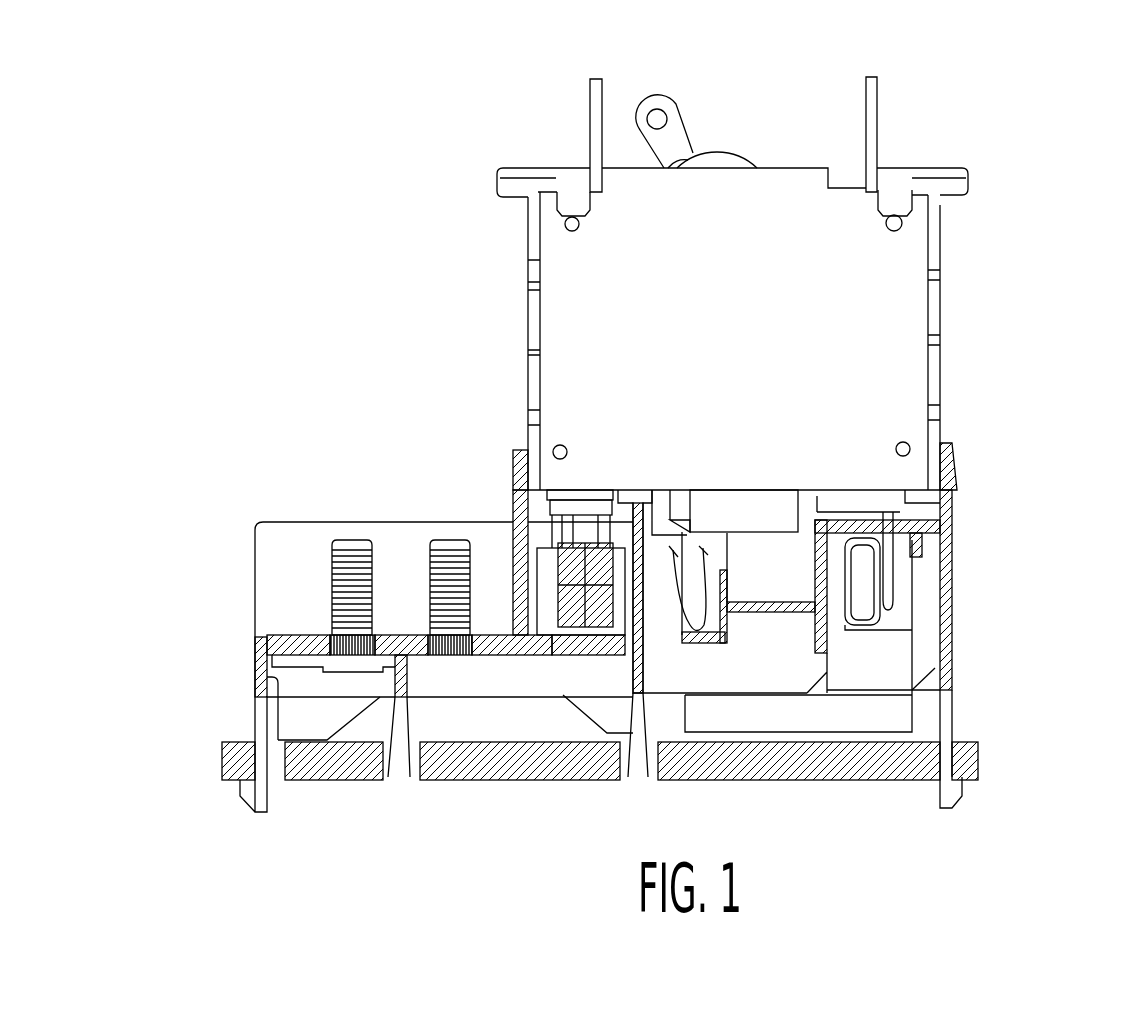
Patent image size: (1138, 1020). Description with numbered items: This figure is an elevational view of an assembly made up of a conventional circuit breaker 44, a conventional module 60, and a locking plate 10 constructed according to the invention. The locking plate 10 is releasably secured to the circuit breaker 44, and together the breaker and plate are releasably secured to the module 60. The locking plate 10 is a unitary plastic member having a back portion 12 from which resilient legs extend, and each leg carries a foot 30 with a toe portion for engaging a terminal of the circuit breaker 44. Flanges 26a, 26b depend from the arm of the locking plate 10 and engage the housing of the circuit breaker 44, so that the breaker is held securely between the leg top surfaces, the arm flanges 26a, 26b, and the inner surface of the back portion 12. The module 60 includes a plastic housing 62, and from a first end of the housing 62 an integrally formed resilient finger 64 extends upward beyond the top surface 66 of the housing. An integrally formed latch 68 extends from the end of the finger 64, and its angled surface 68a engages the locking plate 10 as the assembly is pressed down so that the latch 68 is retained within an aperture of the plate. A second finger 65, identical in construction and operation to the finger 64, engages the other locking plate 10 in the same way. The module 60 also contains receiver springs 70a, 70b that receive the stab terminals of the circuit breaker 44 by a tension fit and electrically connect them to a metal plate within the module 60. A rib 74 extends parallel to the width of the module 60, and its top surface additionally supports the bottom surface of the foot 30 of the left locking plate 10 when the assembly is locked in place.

The locking plate 10 is at (487, 165).
The back portion 12 is at (528, 318).
The flange 26a is at (550, 185).
The flange 26b is at (915, 178).
The circuit breaker 44 is at (727, 215).
The angled surface 68a is at (540, 450).
The latch 68 is at (952, 452).
The second finger 65 is at (517, 517).
The housing 62 is at (288, 522).
The module 60 is at (393, 513).
The receiver spring 70a is at (615, 623).
The foot 30 is at (652, 490).
The top surface 66 is at (637, 507).
The rib 74 is at (672, 522).
The receiver spring 70b is at (885, 620).
The resilient finger 64 is at (945, 582).